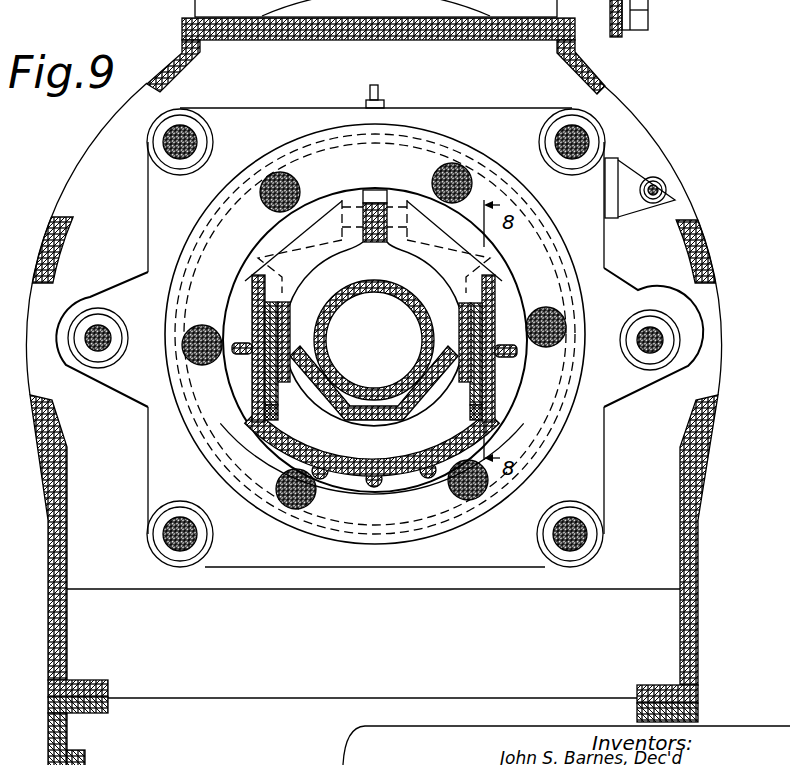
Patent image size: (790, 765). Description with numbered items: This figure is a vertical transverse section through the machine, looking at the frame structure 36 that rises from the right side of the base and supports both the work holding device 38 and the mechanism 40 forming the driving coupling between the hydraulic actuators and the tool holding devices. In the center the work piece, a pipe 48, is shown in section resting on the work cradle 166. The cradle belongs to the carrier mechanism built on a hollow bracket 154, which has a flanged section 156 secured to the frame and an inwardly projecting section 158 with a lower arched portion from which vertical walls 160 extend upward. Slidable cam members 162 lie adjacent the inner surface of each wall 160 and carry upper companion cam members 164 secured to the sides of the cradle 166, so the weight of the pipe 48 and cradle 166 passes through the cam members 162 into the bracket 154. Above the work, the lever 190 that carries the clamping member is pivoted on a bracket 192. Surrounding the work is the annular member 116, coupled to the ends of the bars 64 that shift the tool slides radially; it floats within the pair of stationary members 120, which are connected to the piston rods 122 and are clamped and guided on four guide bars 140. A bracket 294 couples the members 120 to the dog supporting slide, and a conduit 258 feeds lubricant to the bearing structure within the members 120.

The frame structure 36 is at (711, 238).
The work holding device 38 is at (402, 480).
The mechanism 40 is at (614, 481).
The pipe 48 is at (380, 284).
The bar 64 is at (455, 170).
The annular member 116 is at (437, 507).
The stationary members 120 is at (598, 437).
The piston rods 122 is at (94, 330).
The guide bars 140 is at (191, 136).
The hollow bracket 154 is at (355, 470).
The flanged section 156 is at (652, 3).
The inwardly projecting section 158 is at (298, 442).
The walls 160 is at (253, 366).
The cam members 162 is at (268, 357).
The upper companion cam members 164 is at (265, 302).
The work cradle 166 is at (373, 422).
The lever 190 is at (373, 243).
The bracket 192 is at (417, 213).
The conduit 258 is at (367, 87).
The bracket 294 is at (632, 174).